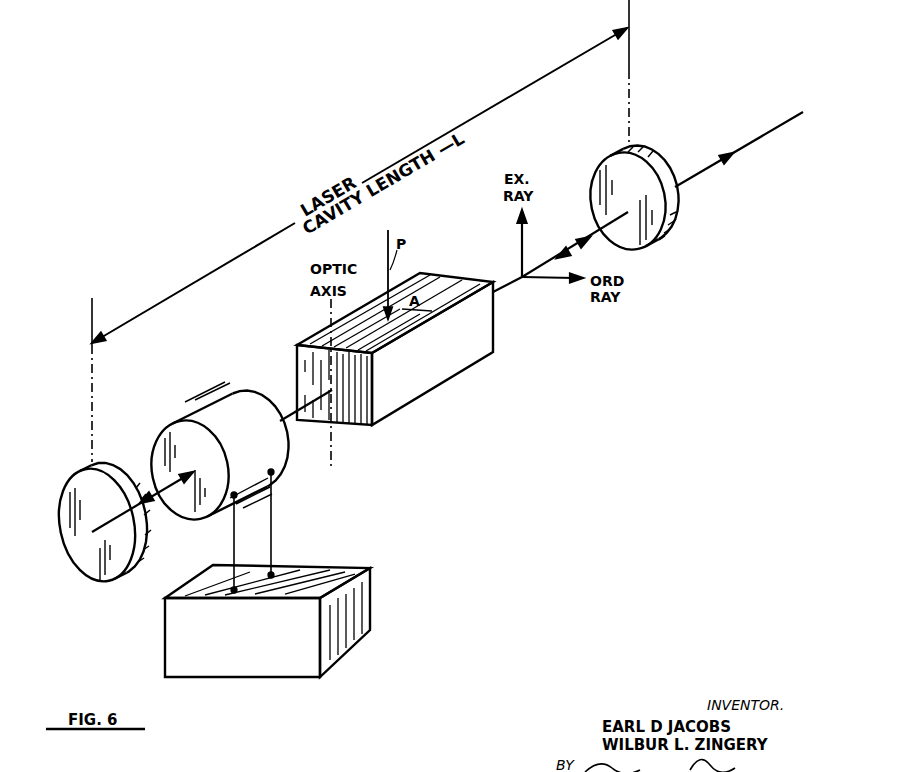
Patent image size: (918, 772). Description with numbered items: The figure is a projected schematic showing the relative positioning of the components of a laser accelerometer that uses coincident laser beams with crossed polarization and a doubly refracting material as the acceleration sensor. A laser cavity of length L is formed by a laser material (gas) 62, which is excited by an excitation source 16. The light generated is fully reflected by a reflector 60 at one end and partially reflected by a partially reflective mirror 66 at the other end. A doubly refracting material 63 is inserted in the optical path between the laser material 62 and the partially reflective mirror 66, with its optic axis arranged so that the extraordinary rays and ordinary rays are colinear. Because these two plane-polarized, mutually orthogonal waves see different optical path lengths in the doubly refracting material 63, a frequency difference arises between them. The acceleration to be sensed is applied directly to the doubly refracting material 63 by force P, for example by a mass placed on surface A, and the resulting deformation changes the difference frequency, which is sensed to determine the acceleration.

The excitation source 16 is at (342, 652).
The reflector 60 is at (85, 546).
The laser material (gas) 62 is at (273, 452).
The doubly refracting material 63 is at (355, 426).
The partially reflective mirror 66 is at (678, 238).